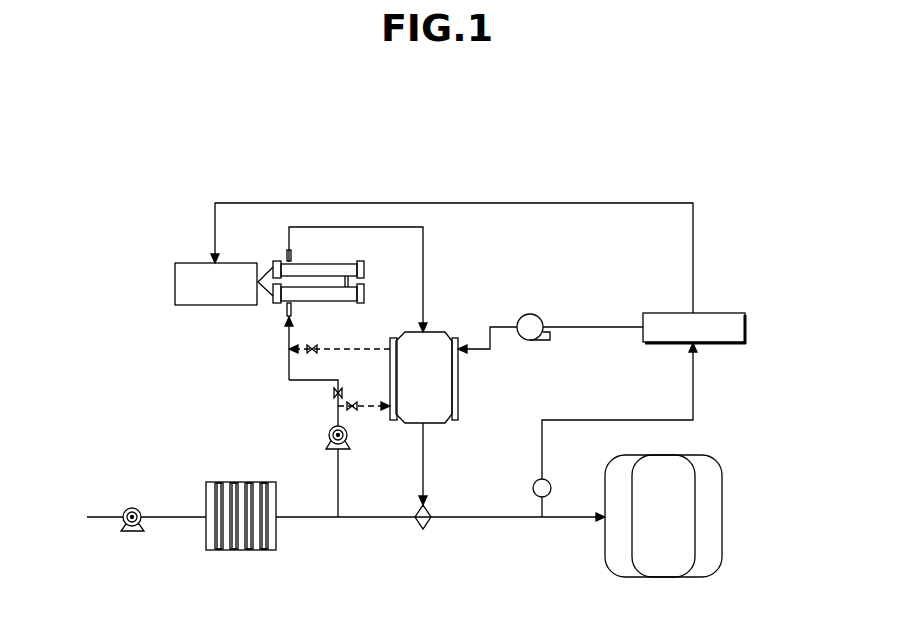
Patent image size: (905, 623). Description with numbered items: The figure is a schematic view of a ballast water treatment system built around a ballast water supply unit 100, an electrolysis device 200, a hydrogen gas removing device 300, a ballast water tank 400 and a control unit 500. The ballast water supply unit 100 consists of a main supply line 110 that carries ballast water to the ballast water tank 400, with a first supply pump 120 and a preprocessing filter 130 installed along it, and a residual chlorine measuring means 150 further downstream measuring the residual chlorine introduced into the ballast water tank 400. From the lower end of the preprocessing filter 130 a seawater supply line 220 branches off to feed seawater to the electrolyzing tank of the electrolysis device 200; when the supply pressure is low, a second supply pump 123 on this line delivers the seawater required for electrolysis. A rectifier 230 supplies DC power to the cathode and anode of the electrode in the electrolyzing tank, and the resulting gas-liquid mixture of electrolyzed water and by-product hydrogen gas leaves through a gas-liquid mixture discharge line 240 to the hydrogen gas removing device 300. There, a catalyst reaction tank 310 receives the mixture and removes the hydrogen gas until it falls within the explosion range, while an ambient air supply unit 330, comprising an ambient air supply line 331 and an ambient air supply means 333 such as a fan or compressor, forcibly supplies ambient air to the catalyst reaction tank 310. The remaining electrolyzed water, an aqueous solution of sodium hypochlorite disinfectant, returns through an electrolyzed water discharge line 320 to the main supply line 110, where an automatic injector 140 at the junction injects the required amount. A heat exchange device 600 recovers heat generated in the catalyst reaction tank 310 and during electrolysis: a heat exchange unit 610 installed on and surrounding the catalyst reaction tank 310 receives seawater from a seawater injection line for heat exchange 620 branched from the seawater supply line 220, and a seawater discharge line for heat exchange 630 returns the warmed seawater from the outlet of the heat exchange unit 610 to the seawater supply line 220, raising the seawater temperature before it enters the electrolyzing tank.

The ballast water supply unit 100 is at (262, 495).
The main supply line 110 is at (176, 514).
The first supply pump 120 is at (134, 507).
The second supply pump 123 is at (327, 438).
The preprocessing filter 130 is at (277, 540).
The automatic injector 140 is at (426, 529).
The residual chlorine measuring means 150 is at (552, 486).
The electrolysis device 200 is at (320, 304).
The seawater supply line 220 is at (316, 381).
The rectifier 230 is at (173, 276).
The gas-liquid mixture discharge line 240 is at (427, 228).
The hydrogen gas removing device 300 is at (437, 351).
The catalyst reaction tank 310 is at (447, 397).
The electrolyzed water discharge line 320 is at (428, 455).
The ambient air supply unit 330 is at (543, 319).
The ambient air supply line 331 is at (500, 326).
The ambient air supply means 333 is at (532, 339).
The ballast water tank 400 is at (723, 490).
The control unit 500 is at (750, 331).
The heat exchange device 600 is at (372, 415).
The heat exchange unit 610 is at (395, 338).
The seawater injection line for heat exchange 620 is at (361, 405).
The seawater discharge line for heat exchange 630 is at (333, 348).